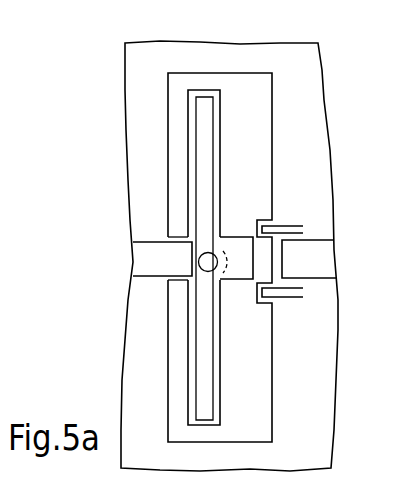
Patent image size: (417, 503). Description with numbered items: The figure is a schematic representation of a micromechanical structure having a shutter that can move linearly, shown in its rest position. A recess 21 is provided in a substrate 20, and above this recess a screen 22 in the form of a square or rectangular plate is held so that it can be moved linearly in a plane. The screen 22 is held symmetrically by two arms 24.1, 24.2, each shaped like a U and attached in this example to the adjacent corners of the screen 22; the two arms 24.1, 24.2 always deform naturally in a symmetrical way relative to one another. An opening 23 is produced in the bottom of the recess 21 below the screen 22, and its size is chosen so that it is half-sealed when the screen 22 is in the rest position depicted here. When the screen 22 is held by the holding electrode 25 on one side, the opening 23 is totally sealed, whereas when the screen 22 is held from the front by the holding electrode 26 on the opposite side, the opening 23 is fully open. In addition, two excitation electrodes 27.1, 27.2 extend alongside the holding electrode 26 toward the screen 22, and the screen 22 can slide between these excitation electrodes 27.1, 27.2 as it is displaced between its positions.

The substrate 20 is at (303, 115).
The recess 21 is at (275, 152).
The screen 22 is at (237, 284).
The opening 23 is at (202, 274).
The arm 24.1 is at (187, 118).
The arm 24.2 is at (186, 364).
The holding electrode 25 is at (151, 257).
The holding electrode 26 is at (317, 262).
The excitation electrode 27.1 is at (291, 219).
The excitation electrode 27.2 is at (294, 300).